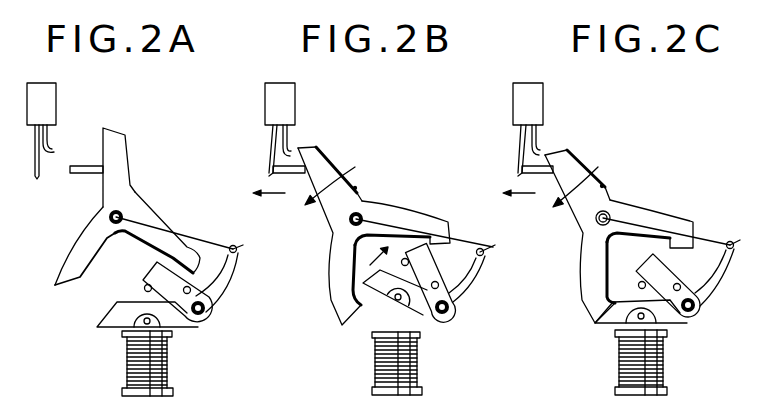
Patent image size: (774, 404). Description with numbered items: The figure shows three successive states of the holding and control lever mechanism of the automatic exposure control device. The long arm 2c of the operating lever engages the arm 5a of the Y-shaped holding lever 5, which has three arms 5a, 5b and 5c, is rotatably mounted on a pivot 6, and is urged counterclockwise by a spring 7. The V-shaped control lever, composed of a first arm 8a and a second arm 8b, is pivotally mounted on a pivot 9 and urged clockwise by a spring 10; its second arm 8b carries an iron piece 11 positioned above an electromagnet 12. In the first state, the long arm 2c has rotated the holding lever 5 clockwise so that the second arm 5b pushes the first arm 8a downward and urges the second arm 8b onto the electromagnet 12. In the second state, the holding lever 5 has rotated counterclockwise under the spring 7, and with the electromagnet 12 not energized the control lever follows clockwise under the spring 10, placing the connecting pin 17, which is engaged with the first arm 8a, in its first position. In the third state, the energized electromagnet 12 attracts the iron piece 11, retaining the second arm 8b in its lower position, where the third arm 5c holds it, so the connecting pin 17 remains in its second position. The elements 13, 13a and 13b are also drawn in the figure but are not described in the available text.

In FIG. 2A, the long arm 2c is at (83, 173).
In FIG. 2B, the long arm 2c is at (297, 175).
In FIG. 2C, the long arm 2c is at (543, 174).
In FIG. 2A, the holding lever 5 is at (138, 224).
In FIG. 2B, the holding lever 5 is at (377, 233).
In FIG. 2C, the holding lever 5 is at (625, 227).
In FIG. 2A, the arm 5a is at (118, 140).
In FIG. 2B, the arm 5a is at (318, 152).
In FIG. 2C, the arm 5a is at (565, 157).
In FIG. 2A, the second arm 5b is at (201, 256).
In FIG. 2B, the second arm 5b is at (447, 223).
In FIG. 2C, the second arm 5b is at (688, 223).
In FIG. 2A, the third arm 5c is at (72, 278).
In FIG. 2B, the third arm 5c is at (338, 315).
In FIG. 2C, the third arm 5c is at (597, 300).
In FIG. 2A, the pivot 6 is at (119, 210).
In FIG. 2B, the pivot 6 is at (350, 221).
In FIG. 2C, the pivot 6 is at (597, 221).
In FIG. 2A, the spring 7 is at (158, 230).
In FIG. 2B, the spring 7 is at (424, 233).
In FIG. 2C, the spring 7 is at (666, 231).
In FIG. 2A, the first arm 8a is at (152, 268).
In FIG. 2B, the first arm 8a is at (421, 258).
In FIG. 2C, the first arm 8a is at (650, 270).
In FIG. 2A, the second arm 8b is at (113, 322).
In FIG. 2B, the second arm 8b is at (378, 276).
In FIG. 2C, the second arm 8b is at (612, 317).
In FIG. 2A, the pivot 9 is at (210, 309).
In FIG. 2B, the pivot 9 is at (442, 307).
In FIG. 2C, the pivot 9 is at (688, 305).
In FIG. 2A, the spring 10 is at (227, 280).
In FIG. 2B, the spring 10 is at (472, 278).
In FIG. 2C, the spring 10 is at (697, 292).
In FIG. 2A, the iron piece 11 is at (153, 328).
In FIG. 2B, the iron piece 11 is at (395, 300).
In FIG. 2C, the iron piece 11 is at (650, 328).
In FIG. 2A, the electromagnet 12 is at (157, 363).
In FIG. 2B, the electromagnet 12 is at (400, 363).
In FIG. 2C, the electromagnet 12 is at (650, 365).
In FIG. 2A, the sensor body 13 is at (57, 99).
In FIG. 2B, the sensor body 13 is at (287, 103).
In FIG. 2C, the sensor body 13 is at (532, 103).
In FIG. 2A, the sensor lead 13a is at (37, 179).
In FIG. 2B, the sensor lead 13a is at (268, 173).
In FIG. 2C, the sensor lead 13a is at (517, 171).
In FIG. 2A, the sensor hook lead 13b is at (50, 140).
In FIG. 2A, the connecting pin 17 is at (143, 288).
In FIG. 2B, the connecting pin 17 is at (398, 262).
In FIG. 2C, the connecting pin 17 is at (637, 285).